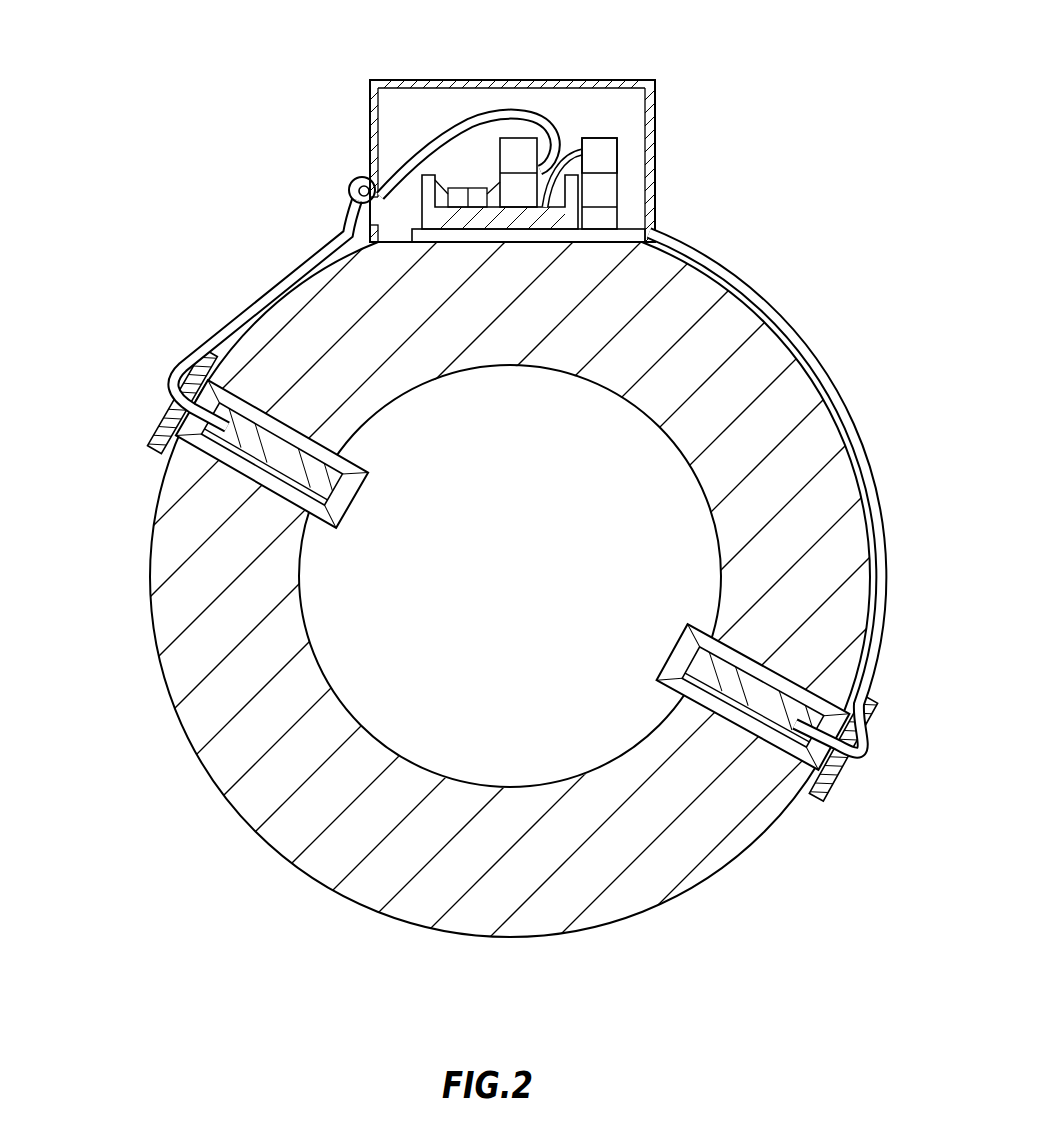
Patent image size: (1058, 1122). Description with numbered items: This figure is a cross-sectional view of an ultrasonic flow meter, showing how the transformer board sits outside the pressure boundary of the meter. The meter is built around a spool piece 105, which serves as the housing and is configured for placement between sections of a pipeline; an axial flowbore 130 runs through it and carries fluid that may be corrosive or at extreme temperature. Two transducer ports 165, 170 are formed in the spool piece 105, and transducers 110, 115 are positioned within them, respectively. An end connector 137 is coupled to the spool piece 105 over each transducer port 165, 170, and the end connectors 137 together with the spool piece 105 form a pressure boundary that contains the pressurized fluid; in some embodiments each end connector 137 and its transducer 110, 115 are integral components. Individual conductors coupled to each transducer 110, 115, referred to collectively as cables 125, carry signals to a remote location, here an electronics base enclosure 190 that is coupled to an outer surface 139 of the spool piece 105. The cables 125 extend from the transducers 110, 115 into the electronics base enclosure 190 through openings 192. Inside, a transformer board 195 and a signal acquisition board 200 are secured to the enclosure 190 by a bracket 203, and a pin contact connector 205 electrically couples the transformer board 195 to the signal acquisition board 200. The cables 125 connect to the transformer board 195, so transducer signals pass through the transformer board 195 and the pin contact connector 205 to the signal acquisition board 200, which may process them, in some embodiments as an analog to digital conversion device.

The spool piece 105 is at (508, 888).
The transducer 110 is at (238, 435).
The transducer 115 is at (677, 653).
The cables 125 is at (257, 300).
The axial flowbore 130 is at (527, 572).
The end connector 137 is at (157, 438).
The outer surface 139 is at (320, 885).
The transducer port 165 is at (255, 477).
The transducer port 170 is at (700, 665).
The electronics base enclosure 190 is at (370, 115).
The openings 192 is at (352, 206).
The transformer board 195 is at (584, 100).
The signal acquisition board 200 is at (605, 218).
The bracket 203 is at (645, 238).
The pin contact connector 205 is at (602, 188).